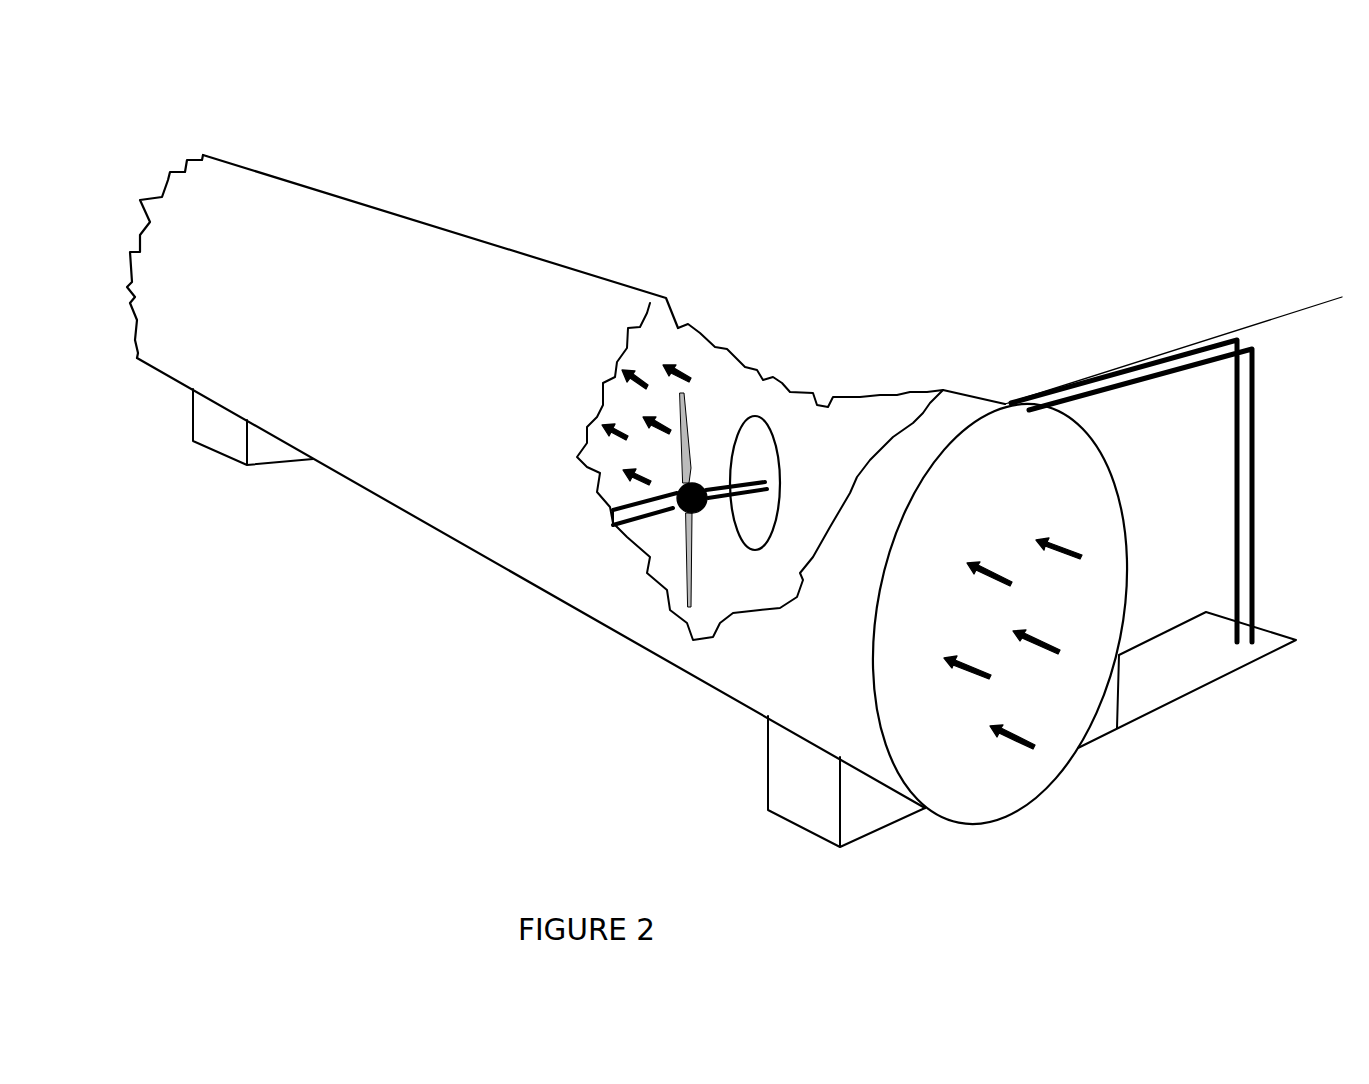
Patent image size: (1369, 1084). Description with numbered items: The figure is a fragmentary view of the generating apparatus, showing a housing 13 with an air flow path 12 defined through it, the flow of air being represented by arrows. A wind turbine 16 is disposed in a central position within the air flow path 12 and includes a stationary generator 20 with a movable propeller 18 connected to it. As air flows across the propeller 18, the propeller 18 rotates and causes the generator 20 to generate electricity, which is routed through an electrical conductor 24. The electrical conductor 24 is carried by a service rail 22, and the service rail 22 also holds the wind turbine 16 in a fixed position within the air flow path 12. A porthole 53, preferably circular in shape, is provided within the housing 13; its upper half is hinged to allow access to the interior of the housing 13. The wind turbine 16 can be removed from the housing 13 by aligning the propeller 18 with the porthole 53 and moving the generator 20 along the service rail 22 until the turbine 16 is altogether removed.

The air flow path 12 is at (652, 348).
The housing 13 is at (357, 273).
The wind turbine 16 is at (703, 580).
The propeller 18 is at (697, 425).
The generator 20 is at (688, 503).
The service rail 22 is at (615, 512).
The electrical conductor 24 is at (1250, 315).
The porthole 53 is at (787, 460).